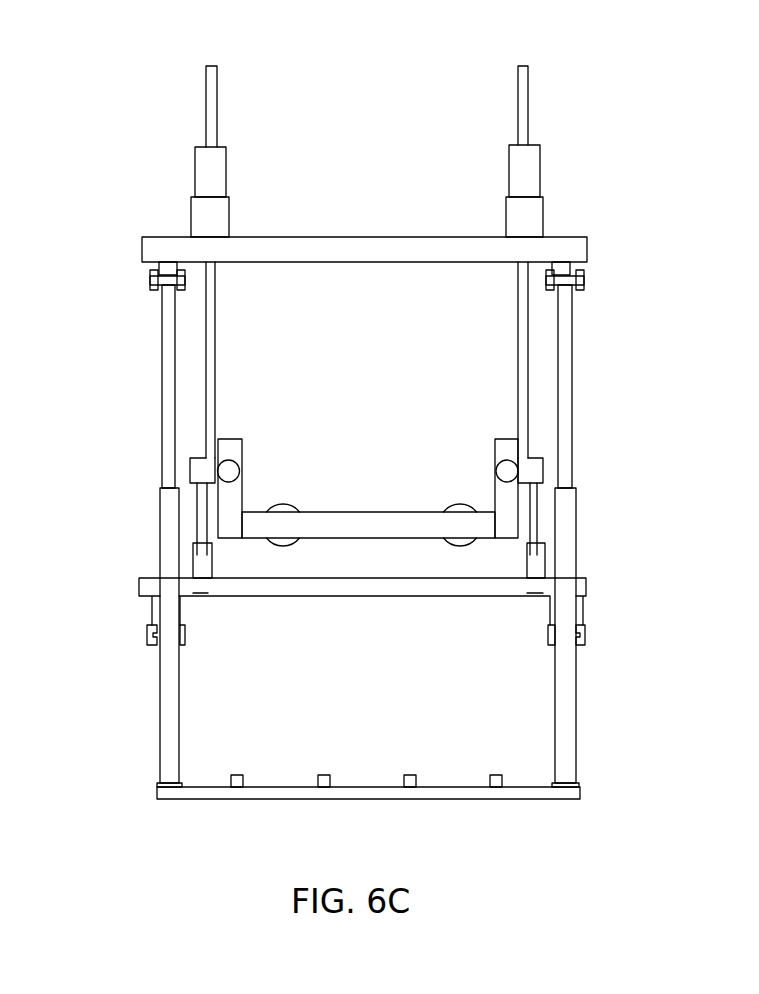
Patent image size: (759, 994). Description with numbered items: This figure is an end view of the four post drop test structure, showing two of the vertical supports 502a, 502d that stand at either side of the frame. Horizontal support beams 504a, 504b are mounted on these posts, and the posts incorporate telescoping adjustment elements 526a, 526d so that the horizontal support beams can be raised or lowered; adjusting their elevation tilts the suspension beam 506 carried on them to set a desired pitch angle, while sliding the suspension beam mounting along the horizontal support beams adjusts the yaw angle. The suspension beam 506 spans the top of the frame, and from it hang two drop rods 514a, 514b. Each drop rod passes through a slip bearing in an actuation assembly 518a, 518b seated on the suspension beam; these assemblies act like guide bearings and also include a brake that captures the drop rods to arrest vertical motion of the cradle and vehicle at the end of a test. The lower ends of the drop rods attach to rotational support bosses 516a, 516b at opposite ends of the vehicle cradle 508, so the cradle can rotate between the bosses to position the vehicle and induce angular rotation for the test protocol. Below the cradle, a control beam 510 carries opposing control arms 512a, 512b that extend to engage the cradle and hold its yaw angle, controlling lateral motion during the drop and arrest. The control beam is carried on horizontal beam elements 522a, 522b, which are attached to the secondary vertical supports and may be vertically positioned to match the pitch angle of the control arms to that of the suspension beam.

The vertical support 502a is at (568, 712).
The vertical support 502d is at (165, 705).
The horizontal support beam 504a is at (583, 283).
The horizontal support beam 504b is at (155, 285).
The suspension beam 506 is at (287, 235).
The vehicle cradle 508 is at (338, 518).
The control beam 510 is at (300, 590).
The control arm 512a is at (533, 540).
The control arm 512b is at (203, 517).
The drop rod 514a is at (523, 107).
The drop rod 514b is at (210, 313).
The rotational support boss 516a is at (535, 470).
The rotational support boss 516b is at (198, 472).
The actuation assembly 518a is at (515, 178).
The actuation assembly 518b is at (209, 165).
The horizontal beam element 522a is at (585, 645).
The horizontal beam element 522b is at (150, 637).
The telescoping adjustment element 526a is at (568, 388).
The telescoping adjustment element 526d is at (172, 353).